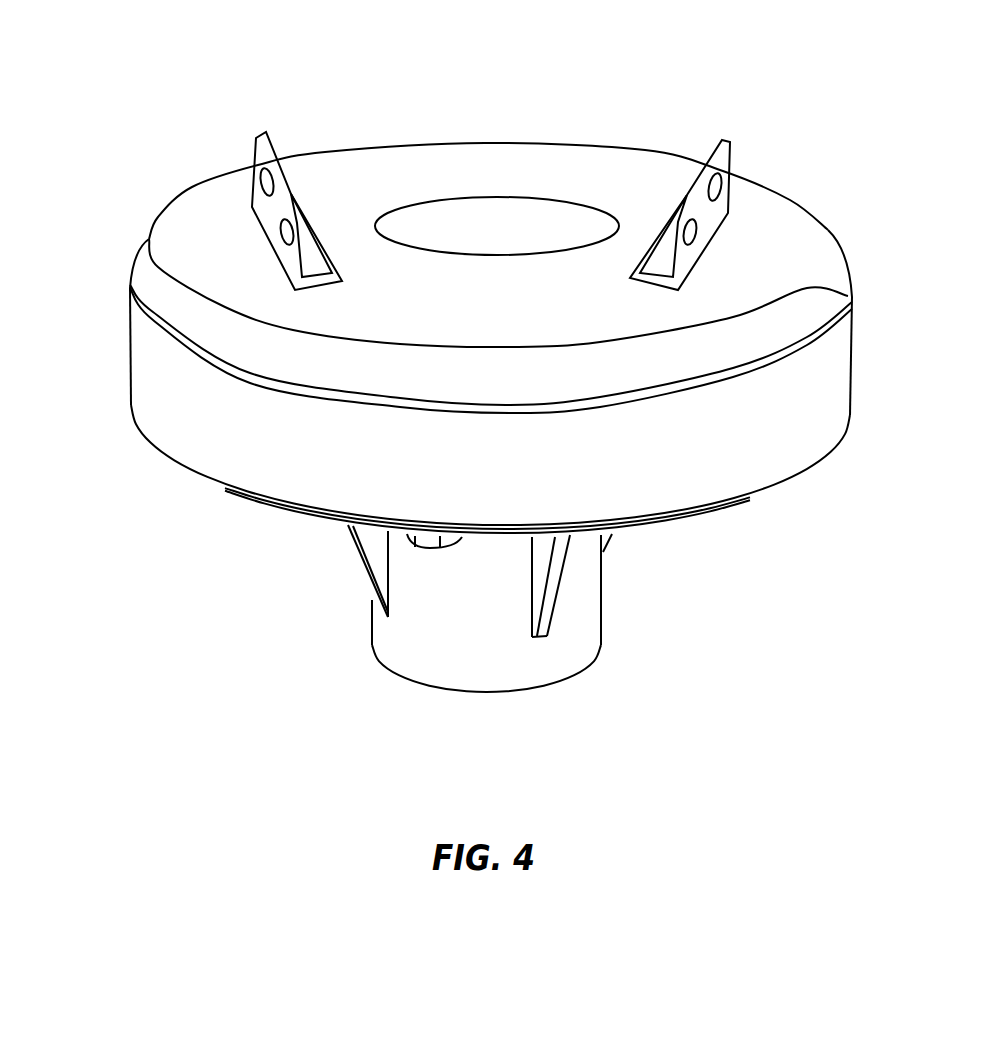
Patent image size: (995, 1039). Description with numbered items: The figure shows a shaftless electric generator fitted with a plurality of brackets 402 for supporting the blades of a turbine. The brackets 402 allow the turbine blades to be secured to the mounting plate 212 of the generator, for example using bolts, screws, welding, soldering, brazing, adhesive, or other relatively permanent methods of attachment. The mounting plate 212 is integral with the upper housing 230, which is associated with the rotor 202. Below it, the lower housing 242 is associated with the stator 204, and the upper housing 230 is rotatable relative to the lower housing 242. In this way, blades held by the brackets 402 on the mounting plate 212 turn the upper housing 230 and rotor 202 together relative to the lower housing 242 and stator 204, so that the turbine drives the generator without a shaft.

The rotor 202 is at (447, 377).
The stator 204 is at (460, 554).
The mounting plate 212 is at (522, 297).
The upper housing 230 is at (499, 211).
The lower housing 242 is at (521, 540).
The brackets 402 is at (491, 145).